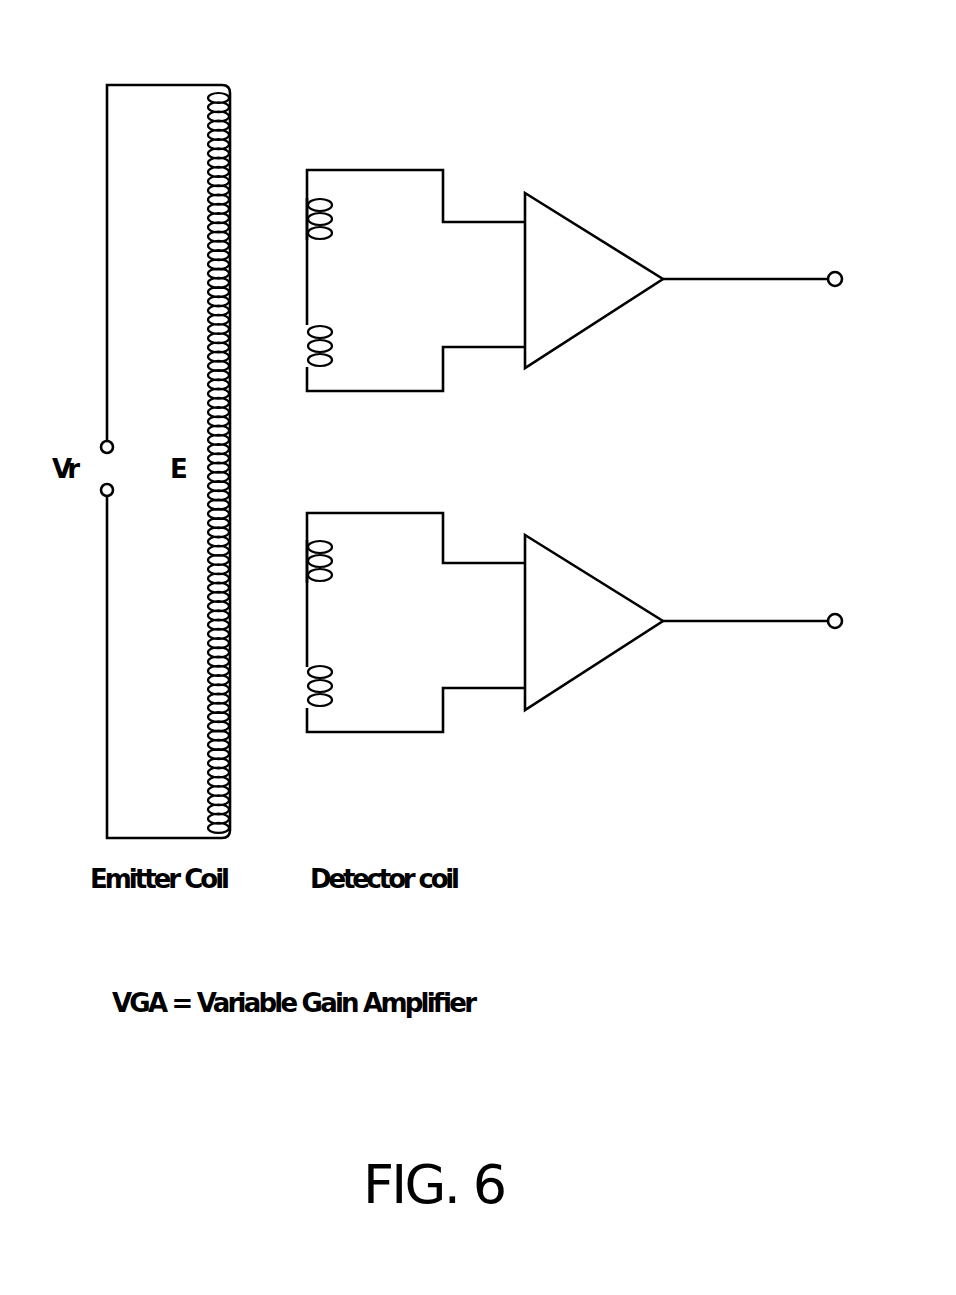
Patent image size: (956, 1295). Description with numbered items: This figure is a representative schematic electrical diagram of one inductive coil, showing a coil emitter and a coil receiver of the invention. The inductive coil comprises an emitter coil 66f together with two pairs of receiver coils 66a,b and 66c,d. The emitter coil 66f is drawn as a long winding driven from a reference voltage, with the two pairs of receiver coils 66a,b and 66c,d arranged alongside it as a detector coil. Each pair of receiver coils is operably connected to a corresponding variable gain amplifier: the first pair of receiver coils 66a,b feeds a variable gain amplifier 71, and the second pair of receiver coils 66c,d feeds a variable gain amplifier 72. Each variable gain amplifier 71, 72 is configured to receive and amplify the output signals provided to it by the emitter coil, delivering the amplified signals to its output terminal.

The emitter coil 66f is at (268, 103).
The receiver coils 66a,b is at (366, 401).
The receiver coils 66c,d is at (368, 743).
The variable gain amplifier 71 is at (632, 273).
The variable gain amplifier 72 is at (632, 615).